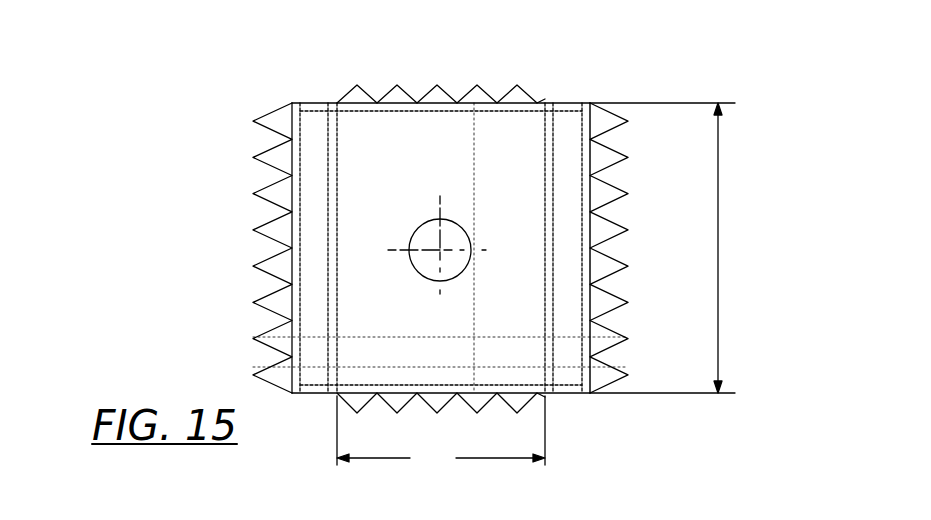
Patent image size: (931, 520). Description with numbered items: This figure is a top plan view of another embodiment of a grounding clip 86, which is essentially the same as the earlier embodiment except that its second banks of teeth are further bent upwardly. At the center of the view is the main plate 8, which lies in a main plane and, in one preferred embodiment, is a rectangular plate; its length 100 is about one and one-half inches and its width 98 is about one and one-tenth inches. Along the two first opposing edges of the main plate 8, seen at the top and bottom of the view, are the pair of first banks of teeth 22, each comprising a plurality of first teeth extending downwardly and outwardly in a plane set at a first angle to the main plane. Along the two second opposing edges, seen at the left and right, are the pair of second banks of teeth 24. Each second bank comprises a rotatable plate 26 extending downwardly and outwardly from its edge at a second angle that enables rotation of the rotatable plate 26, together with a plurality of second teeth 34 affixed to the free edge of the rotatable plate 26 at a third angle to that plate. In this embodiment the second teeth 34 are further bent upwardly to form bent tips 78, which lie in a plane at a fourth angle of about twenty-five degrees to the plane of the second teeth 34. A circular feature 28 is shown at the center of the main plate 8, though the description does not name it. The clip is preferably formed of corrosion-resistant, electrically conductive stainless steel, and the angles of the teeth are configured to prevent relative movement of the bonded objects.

The main plate 8 is at (449, 170).
The first banks of teeth 22 is at (345, 101).
The second banks of teeth 24 is at (658, 126).
The rotatable plate 26 is at (316, 103).
The aperture 28 is at (409, 249).
The second teeth 34 is at (279, 108).
The bent tips 78 is at (255, 123).
The grounding clip 86 is at (473, 240).
The width 98 is at (449, 469).
The length 100 is at (740, 249).